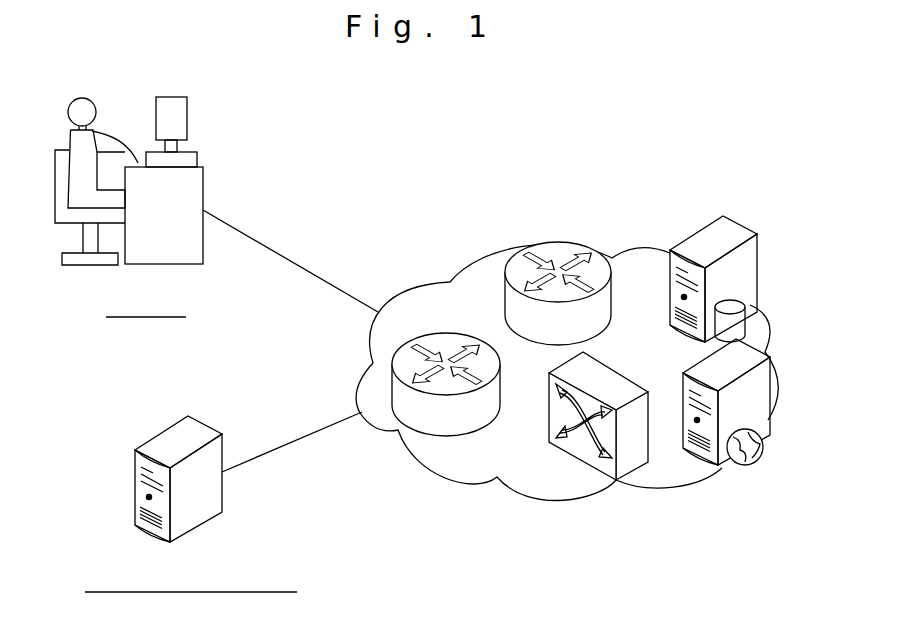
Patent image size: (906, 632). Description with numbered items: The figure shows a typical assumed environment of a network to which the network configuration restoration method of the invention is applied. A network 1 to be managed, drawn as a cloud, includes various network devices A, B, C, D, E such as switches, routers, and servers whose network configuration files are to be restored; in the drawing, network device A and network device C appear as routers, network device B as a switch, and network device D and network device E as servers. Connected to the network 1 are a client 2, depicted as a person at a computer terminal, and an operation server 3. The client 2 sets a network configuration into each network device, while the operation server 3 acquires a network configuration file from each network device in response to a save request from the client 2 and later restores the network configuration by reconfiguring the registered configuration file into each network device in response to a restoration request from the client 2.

The network 1 is at (672, 488).
The client 2 is at (197, 150).
The operation server 3 is at (215, 513).
The network device A is at (448, 436).
The network device B is at (630, 482).
The network device C is at (580, 242).
The network device D is at (757, 250).
The network device E is at (772, 428).